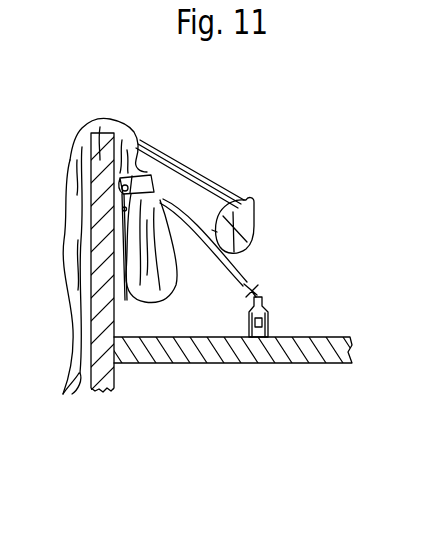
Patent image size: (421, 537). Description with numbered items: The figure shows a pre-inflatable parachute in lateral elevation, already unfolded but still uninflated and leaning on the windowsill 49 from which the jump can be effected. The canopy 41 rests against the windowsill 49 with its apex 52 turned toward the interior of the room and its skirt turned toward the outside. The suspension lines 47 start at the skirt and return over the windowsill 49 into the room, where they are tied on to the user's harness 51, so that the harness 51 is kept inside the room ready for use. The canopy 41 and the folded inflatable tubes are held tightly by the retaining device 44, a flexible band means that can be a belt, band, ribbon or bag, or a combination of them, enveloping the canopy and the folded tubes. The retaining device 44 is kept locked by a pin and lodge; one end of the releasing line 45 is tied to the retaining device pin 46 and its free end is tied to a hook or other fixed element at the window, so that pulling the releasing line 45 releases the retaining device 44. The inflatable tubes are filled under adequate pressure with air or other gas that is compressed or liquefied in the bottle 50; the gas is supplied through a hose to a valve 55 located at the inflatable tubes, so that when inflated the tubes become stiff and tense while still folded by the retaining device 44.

The canopy 41 is at (166, 299).
The retaining device 44 is at (155, 202).
The releasing line 45 is at (125, 299).
The retaining device pin 46 is at (142, 158).
The suspension lines 47 is at (64, 395).
The windowsill 49 is at (108, 132).
The bottle 50 is at (270, 320).
The harness 51 is at (254, 208).
The apex 52 is at (232, 335).
The valve 55 is at (247, 281).